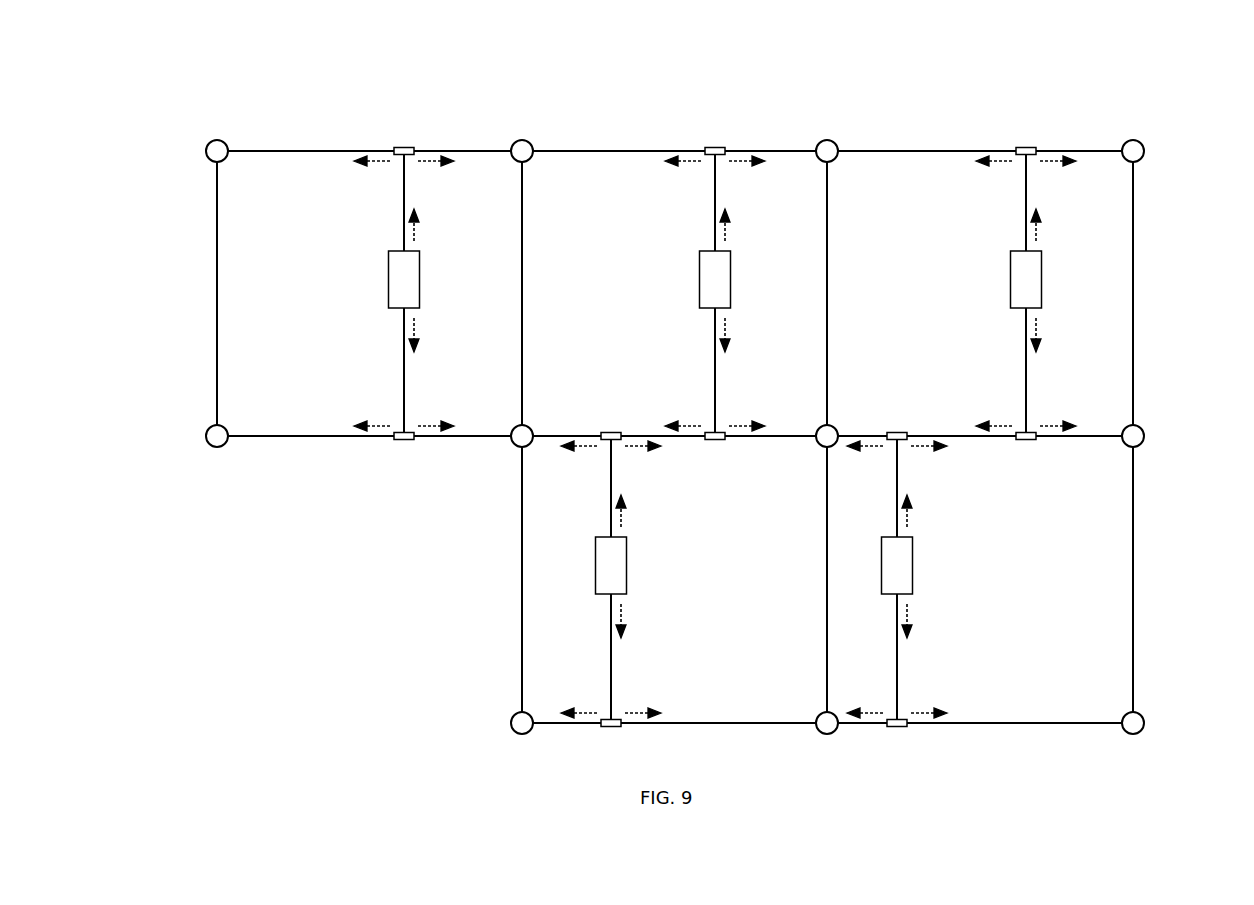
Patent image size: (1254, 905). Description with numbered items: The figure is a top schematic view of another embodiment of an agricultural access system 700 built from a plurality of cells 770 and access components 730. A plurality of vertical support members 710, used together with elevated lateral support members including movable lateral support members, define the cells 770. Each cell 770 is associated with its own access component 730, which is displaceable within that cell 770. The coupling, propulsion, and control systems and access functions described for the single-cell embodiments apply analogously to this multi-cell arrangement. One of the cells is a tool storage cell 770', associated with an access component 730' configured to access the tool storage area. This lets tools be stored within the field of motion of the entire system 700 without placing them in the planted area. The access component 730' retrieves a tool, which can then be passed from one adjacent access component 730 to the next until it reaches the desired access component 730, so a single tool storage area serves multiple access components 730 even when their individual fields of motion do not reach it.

The agricultural access system 700 is at (388, 82).
The vertical support member 710 is at (208, 142).
The access component 730 is at (832, 437).
The access component 730' is at (419, 294).
The cell 770 is at (675, 435).
The tool storage cell 770' is at (369, 143).